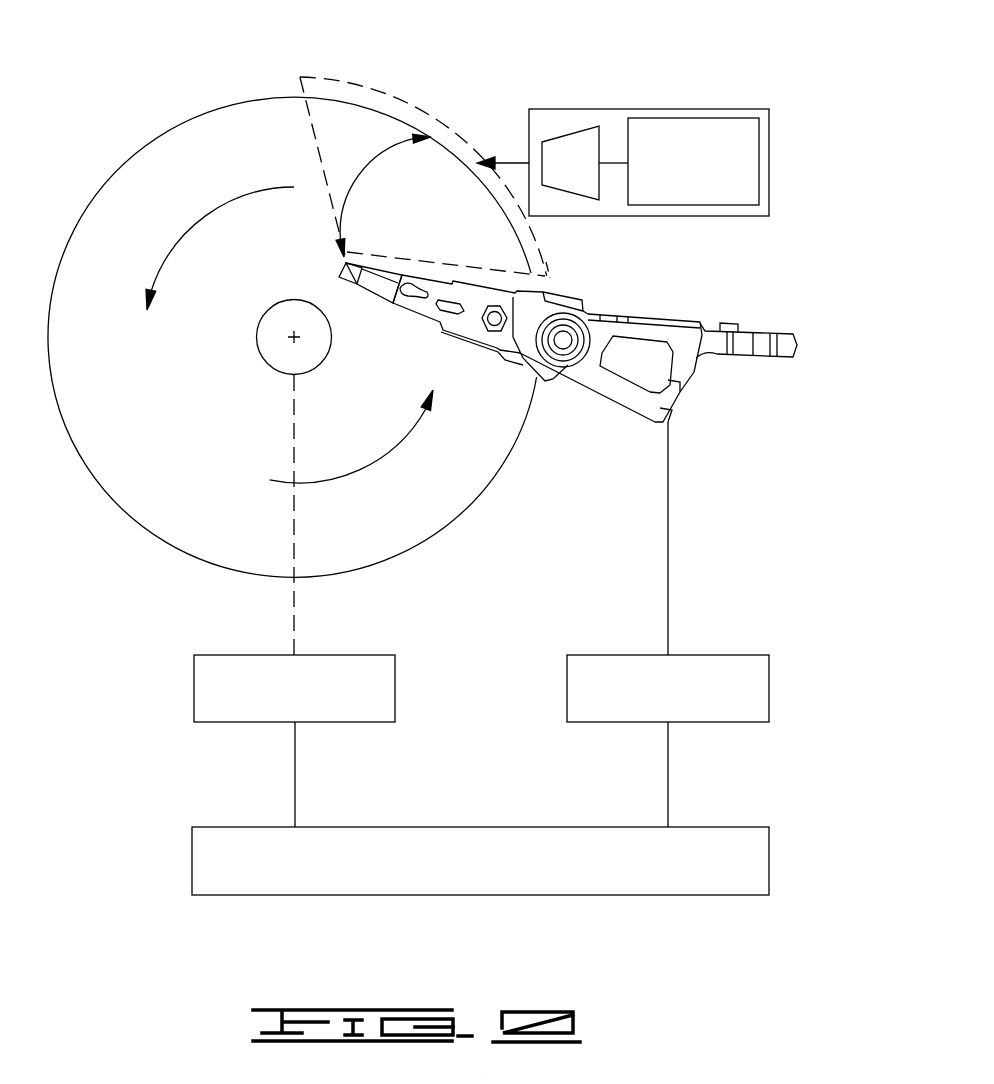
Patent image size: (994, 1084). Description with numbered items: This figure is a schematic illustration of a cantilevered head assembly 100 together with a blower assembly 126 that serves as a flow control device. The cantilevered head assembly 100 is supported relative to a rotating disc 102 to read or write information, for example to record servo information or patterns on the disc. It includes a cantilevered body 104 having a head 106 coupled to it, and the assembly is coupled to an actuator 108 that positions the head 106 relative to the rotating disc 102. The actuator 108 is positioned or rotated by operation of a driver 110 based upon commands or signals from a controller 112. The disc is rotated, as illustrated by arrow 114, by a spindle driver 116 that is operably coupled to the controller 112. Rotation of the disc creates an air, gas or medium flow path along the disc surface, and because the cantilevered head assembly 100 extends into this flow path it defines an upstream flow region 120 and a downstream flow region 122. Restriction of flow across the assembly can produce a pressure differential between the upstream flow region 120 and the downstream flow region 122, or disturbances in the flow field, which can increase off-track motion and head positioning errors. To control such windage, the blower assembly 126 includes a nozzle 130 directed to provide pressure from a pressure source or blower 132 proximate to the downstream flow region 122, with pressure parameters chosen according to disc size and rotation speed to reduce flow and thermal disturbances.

The cantilevered head assembly 100 is at (489, 277).
The rotating disc 102 is at (222, 103).
The cantilevered body 104 is at (372, 289).
The head 106 is at (340, 258).
The actuator 108 is at (570, 387).
The driver 110 is at (567, 692).
The controller 112 is at (192, 853).
The arrow 114 is at (185, 230).
The spindle driver 116 is at (195, 683).
The upstream flow region 120 is at (421, 505).
The downstream flow region 122 is at (417, 214).
The blower assembly 126 is at (701, 108).
The nozzle 130 is at (560, 142).
The blower 132 is at (743, 125).